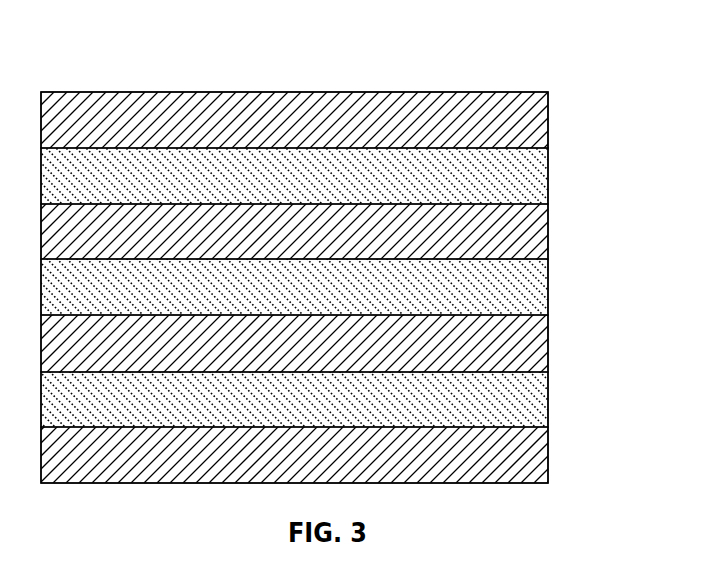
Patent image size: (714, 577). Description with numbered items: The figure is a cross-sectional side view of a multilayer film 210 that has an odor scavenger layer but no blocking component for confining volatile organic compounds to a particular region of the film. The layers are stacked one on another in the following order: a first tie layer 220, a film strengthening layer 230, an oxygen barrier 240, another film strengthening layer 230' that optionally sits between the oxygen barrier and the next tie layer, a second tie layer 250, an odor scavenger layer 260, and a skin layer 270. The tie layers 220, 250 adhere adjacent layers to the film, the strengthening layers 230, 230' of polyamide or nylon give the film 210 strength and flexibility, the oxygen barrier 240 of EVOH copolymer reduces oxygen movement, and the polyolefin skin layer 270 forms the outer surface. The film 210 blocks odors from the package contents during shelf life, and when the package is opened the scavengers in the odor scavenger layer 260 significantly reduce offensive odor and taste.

The film 210 is at (473, 71).
The first tie layer 220 is at (541, 456).
The film strengthening layer 230 is at (357, 287).
The another film strengthening layer 230' is at (357, 287).
The oxygen barrier layer 240 is at (540, 347).
The second tie layer 250 is at (540, 231).
The odor scavenger layer 260 is at (540, 180).
The skin layer 270 is at (538, 124).